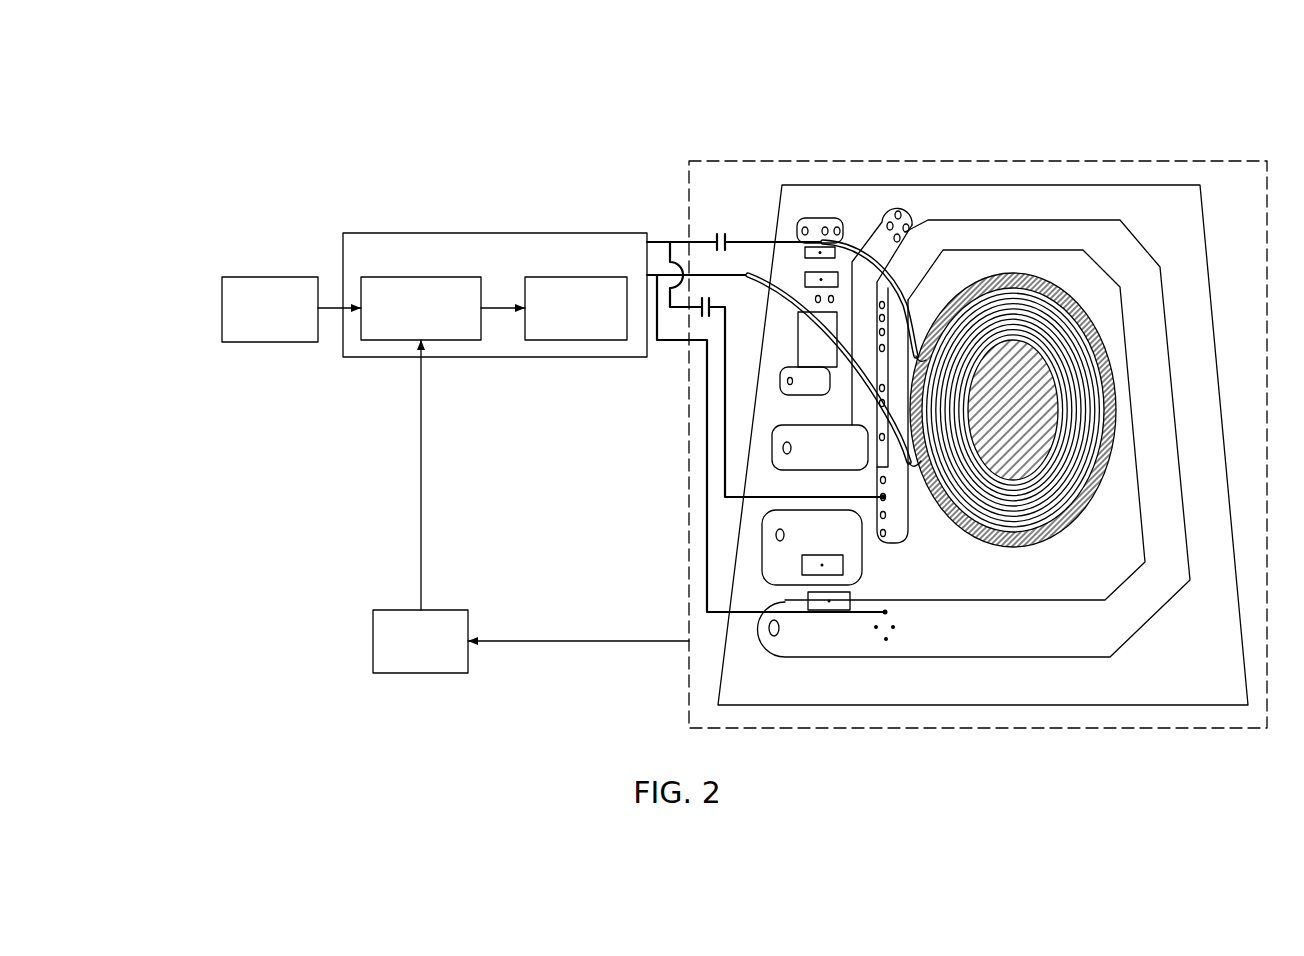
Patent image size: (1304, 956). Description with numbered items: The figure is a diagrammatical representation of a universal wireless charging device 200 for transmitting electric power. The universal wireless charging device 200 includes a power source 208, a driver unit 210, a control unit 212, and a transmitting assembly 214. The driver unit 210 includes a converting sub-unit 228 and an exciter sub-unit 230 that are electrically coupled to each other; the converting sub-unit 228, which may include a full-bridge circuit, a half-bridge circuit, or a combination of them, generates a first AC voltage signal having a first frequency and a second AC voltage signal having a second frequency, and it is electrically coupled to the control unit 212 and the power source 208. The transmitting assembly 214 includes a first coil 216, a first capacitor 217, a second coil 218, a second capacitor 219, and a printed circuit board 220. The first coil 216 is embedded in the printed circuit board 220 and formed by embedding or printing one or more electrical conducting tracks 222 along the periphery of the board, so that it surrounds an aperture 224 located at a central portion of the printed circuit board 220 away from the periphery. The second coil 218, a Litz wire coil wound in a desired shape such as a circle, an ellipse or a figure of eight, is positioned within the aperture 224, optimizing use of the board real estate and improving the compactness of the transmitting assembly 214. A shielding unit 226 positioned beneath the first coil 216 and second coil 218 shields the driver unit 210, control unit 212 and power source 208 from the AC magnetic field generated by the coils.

The universal wireless charging device 200 is at (268, 93).
The power source 208 is at (270, 277).
The driver unit 210 is at (500, 233).
The control unit 212 is at (447, 610).
The transmitting assembly 214 is at (745, 161).
The first coil 216 is at (1034, 226).
The first capacitor 217 is at (711, 303).
The second coil 218 is at (1020, 429).
The second capacitor 219 is at (727, 236).
The printed circuit board 220 is at (1017, 690).
The electrical conducting tracks 222 is at (1122, 250).
The aperture 224 is at (957, 534).
The shielding unit 226 is at (1077, 509).
The converting sub-unit 228 is at (378, 277).
The exciter sub-unit 230 is at (578, 277).